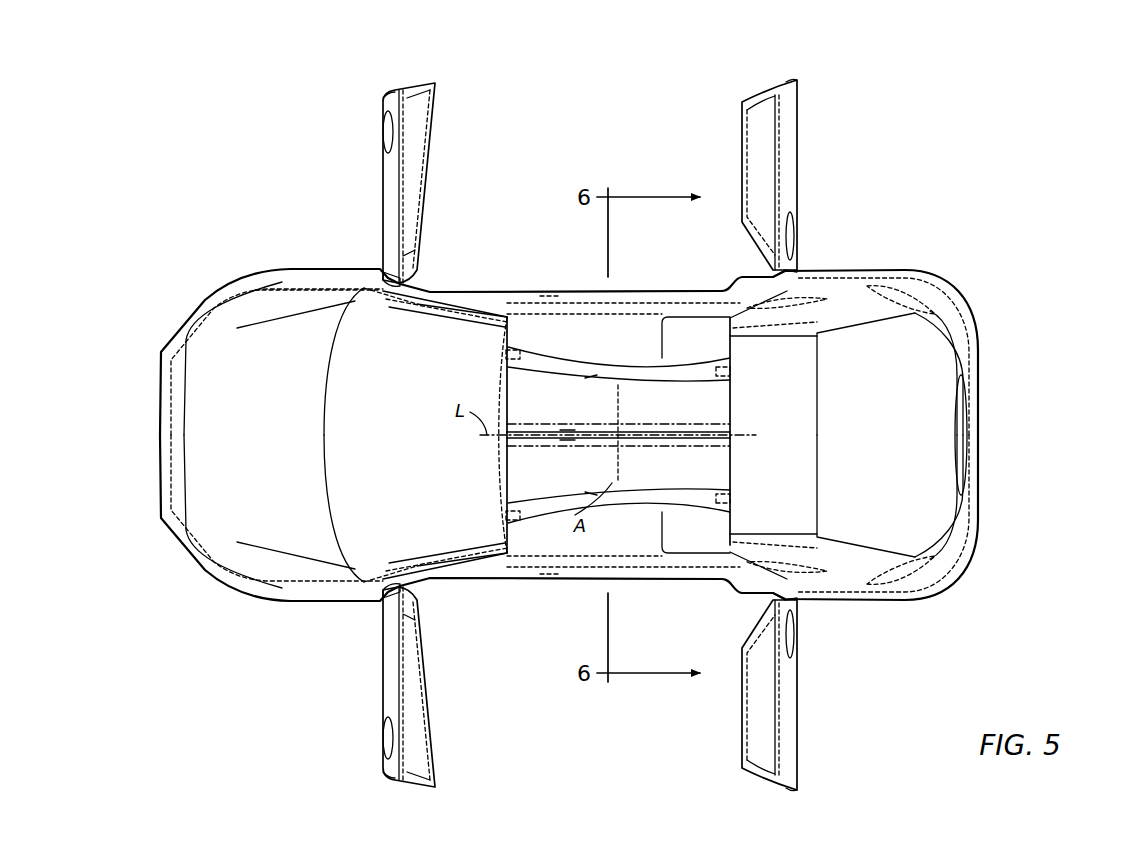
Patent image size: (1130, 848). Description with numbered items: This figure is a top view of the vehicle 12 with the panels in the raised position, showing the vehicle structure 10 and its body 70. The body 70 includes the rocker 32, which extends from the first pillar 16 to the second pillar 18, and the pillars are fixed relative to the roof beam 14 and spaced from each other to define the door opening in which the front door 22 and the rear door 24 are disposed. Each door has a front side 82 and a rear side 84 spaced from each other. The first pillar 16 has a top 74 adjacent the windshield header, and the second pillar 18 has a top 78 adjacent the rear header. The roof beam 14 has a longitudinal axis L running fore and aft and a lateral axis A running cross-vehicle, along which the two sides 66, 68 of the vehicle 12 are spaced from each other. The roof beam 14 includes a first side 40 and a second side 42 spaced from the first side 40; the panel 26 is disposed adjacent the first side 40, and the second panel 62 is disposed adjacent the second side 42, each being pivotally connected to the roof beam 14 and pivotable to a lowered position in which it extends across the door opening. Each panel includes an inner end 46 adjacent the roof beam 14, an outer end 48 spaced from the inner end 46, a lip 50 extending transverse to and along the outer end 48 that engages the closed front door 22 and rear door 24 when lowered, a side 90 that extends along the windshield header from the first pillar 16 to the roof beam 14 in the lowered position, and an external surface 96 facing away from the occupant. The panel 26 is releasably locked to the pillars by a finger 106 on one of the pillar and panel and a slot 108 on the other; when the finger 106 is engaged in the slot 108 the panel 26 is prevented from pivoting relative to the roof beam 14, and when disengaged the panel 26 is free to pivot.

The vehicle structure 10 is at (200, 300).
The vehicle 12 is at (985, 150).
The roof beam 14 is at (665, 428).
The first pillar 16 is at (425, 297).
The second pillar 18 is at (798, 290).
The front door 22 is at (376, 190).
The rear door 24 is at (800, 197).
The panel 26 is at (740, 467).
The rocker 32 is at (556, 290).
The first side 40 is at (520, 440).
The second side 42 is at (520, 427).
The inner end 46 is at (568, 428).
The outer end 48 is at (590, 380).
The lip 50 is at (640, 366).
The second panel 62 is at (740, 400).
The side 66 is at (548, 620).
The side 68 is at (548, 252).
The body 70 is at (290, 268).
The top 74 is at (480, 320).
The top 78 is at (750, 336).
The front side 82 is at (383, 272).
The rear side 84 is at (388, 98).
The side 90 is at (508, 393).
The external surface 96 is at (636, 416).
The finger 106 is at (506, 356).
The slot 108 is at (505, 318).